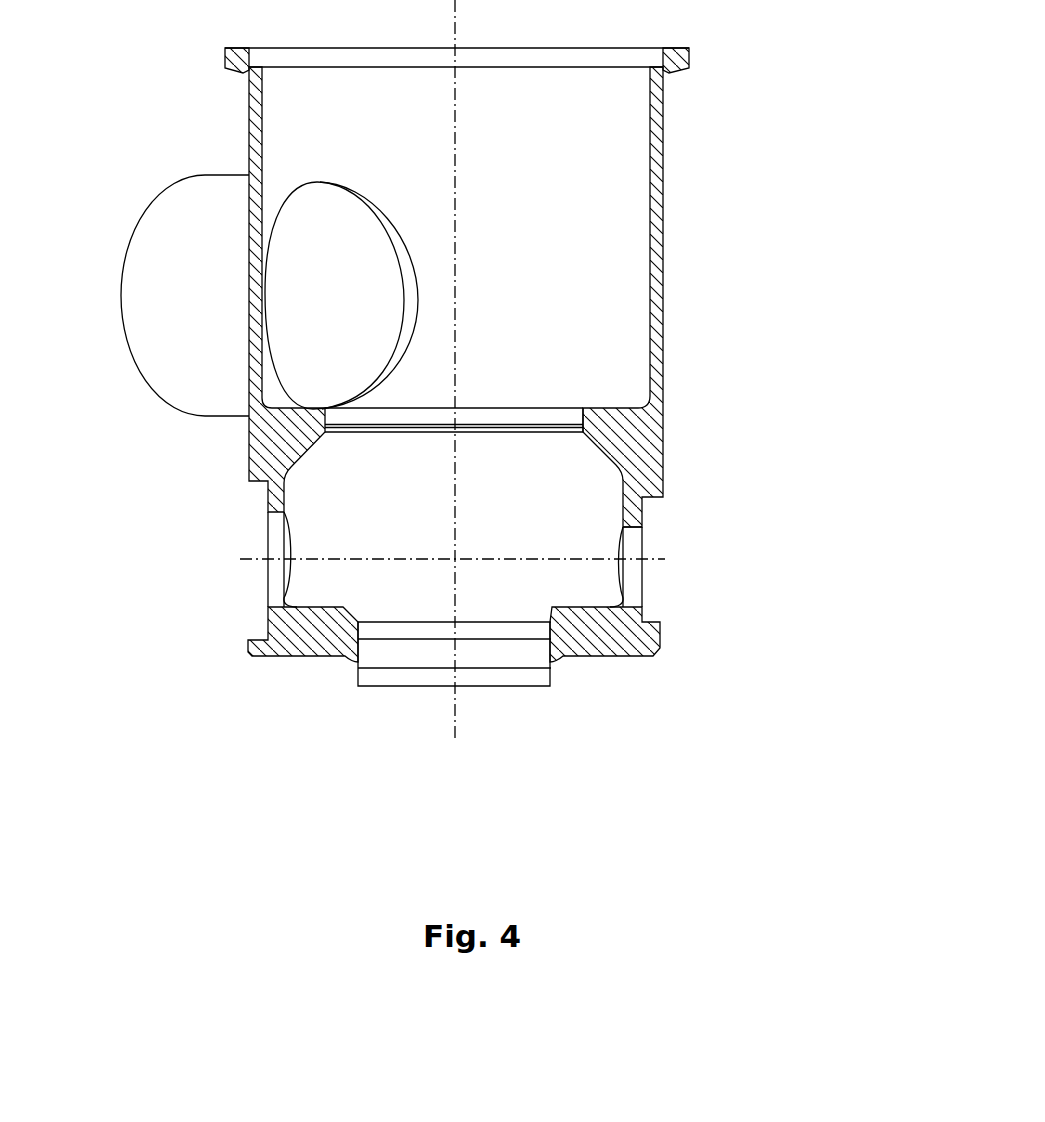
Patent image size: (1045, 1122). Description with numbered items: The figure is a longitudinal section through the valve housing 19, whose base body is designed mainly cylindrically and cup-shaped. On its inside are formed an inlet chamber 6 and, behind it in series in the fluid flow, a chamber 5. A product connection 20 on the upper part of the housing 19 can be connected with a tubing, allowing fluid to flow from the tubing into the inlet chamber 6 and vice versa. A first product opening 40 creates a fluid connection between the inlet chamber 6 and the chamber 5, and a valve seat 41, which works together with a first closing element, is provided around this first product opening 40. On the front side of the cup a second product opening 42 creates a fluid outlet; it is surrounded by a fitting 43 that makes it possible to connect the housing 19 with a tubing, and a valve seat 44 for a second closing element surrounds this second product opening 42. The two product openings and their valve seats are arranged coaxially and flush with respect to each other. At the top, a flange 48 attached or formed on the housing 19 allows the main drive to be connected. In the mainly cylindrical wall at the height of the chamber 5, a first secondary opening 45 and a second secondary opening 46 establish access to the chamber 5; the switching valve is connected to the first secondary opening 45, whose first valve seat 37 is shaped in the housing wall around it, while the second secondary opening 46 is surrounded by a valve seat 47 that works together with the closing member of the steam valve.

The chamber 5 is at (505, 512).
The inlet chamber 6 is at (533, 276).
The housing 19 is at (638, 450).
The product connection 20 is at (167, 222).
The first valve seat 37 is at (274, 606).
The first product opening 40 is at (395, 417).
The valve seat 41 is at (584, 421).
The second product opening 42 is at (440, 628).
The fitting 43 is at (357, 678).
The valve seat 44 is at (549, 612).
The first secondary opening 45 is at (272, 547).
The second secondary opening 46 is at (635, 571).
The valve seat 47 is at (640, 532).
The flange 48 is at (678, 55).